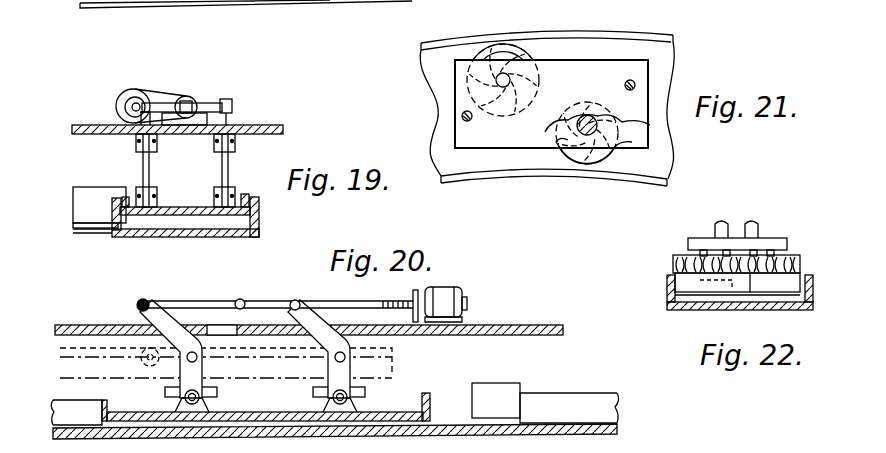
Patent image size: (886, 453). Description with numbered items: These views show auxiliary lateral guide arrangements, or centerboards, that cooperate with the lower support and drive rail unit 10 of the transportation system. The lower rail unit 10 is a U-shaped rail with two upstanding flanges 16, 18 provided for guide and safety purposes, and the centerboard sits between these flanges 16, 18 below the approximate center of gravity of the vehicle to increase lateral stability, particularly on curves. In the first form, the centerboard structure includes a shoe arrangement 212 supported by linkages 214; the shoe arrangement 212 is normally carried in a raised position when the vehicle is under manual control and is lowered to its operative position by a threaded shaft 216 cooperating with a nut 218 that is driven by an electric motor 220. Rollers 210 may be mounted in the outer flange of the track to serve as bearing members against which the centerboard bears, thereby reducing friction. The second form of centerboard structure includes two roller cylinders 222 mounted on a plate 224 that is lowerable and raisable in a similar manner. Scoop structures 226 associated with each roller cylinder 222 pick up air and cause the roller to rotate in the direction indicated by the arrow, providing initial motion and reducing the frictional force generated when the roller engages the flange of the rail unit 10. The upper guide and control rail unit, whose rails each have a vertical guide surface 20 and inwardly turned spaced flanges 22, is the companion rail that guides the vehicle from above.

In FIG. 19, the lower support and drive rail unit 10 is at (150, 237).
In FIG. 20, the lower support and drive rail unit 10 is at (564, 388).
In FIG. 21, the lower support and drive rail unit 10 is at (430, 78).
In FIG. 22, the lower support and drive rail unit 10 is at (694, 314).
In FIG. 19, the upstanding flange 16 is at (112, 209).
In FIG. 19, the upstanding flange 18 is at (259, 222).
In FIG. 19, the vertical guide surface 20 is at (228, 100).
In FIG. 21, the inwardly turned flange 22 is at (443, 198).
In FIG. 19, the roller 210 is at (82, 188).
In FIG. 20, the roller 210 is at (494, 397).
In FIG. 19, the shoe arrangement 212 is at (197, 203).
In FIG. 20, the shoe arrangement 212 is at (401, 410).
In FIG. 19, the linkage 214 is at (140, 168).
In FIG. 20, the linkage 214 is at (169, 330).
In FIG. 19, the threaded shaft 216 is at (172, 173).
In FIG. 20, the threaded shaft 216 is at (246, 312).
In FIG. 19, the nut 218 is at (187, 93).
In FIG. 20, the nut 218 is at (411, 293).
In FIG. 19, the electric motor 220 is at (123, 97).
In FIG. 20, the electric motor 220 is at (448, 293).
In FIG. 21, the roller cylinder 222 is at (470, 63).
In FIG. 22, the roller cylinder 222 is at (801, 280).
In FIG. 21, the plate 224 is at (591, 59).
In FIG. 22, the plate 224 is at (703, 237).
In FIG. 21, the scoop structure 226 is at (519, 56).
In FIG. 22, the scoop structure 226 is at (684, 258).